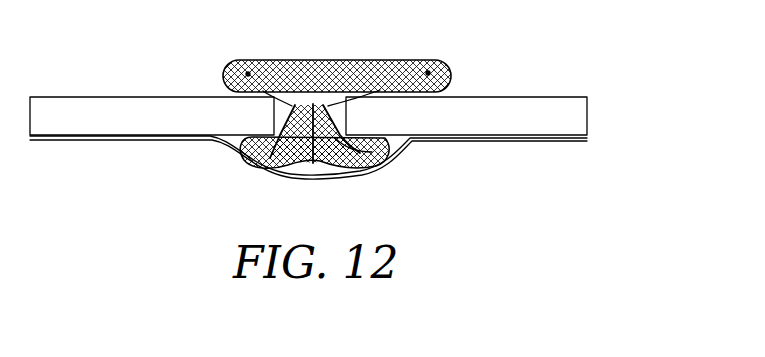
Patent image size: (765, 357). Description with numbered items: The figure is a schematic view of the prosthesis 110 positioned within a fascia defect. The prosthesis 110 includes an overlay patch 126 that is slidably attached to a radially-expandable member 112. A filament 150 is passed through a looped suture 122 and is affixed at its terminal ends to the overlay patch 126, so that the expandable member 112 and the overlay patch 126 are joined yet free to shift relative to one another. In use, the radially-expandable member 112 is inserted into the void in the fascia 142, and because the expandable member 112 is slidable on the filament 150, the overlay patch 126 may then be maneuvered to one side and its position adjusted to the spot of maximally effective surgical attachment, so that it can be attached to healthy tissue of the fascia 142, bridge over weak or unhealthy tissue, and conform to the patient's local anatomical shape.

The prosthesis 110 is at (468, 72).
The radially-expandable member 112 is at (365, 160).
The looped suture 122 is at (342, 84).
The overlay patch 126 is at (389, 72).
The fascia 142 is at (558, 114).
The filament 150 is at (287, 106).